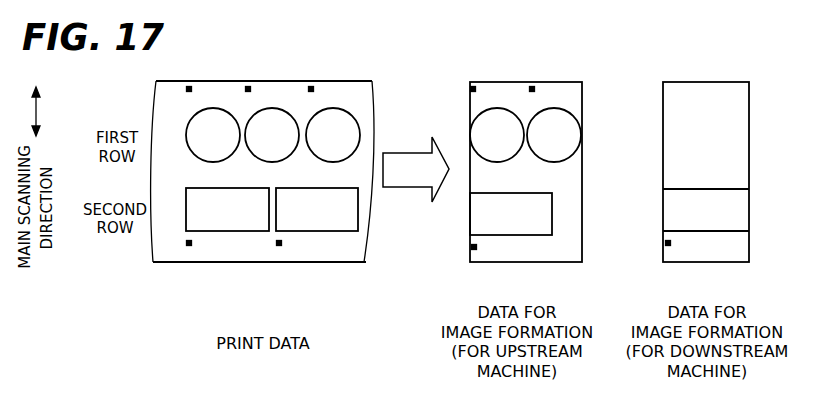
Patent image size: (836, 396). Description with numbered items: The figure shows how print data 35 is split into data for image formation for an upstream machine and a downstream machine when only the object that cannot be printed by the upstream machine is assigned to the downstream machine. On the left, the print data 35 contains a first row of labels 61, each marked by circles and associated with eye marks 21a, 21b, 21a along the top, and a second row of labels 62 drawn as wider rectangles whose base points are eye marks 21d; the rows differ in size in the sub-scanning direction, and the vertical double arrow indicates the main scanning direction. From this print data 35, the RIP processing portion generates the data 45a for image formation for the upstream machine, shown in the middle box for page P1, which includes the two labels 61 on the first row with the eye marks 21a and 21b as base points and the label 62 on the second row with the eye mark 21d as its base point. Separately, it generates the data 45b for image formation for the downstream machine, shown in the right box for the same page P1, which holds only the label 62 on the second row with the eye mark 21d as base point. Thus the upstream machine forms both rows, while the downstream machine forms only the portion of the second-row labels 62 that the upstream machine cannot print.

The eye mark 21a is at (189, 86).
The eye mark 21b is at (248, 86).
The eye mark 21d is at (189, 246).
The print data 35 is at (360, 81).
The label 61 is at (213, 112).
The label 62 is at (237, 231).
The data for image formation for the upstream machine 45a is at (571, 81).
The data for image formation for the downstream machine 45b is at (734, 81).
The page P1 is at (501, 81).